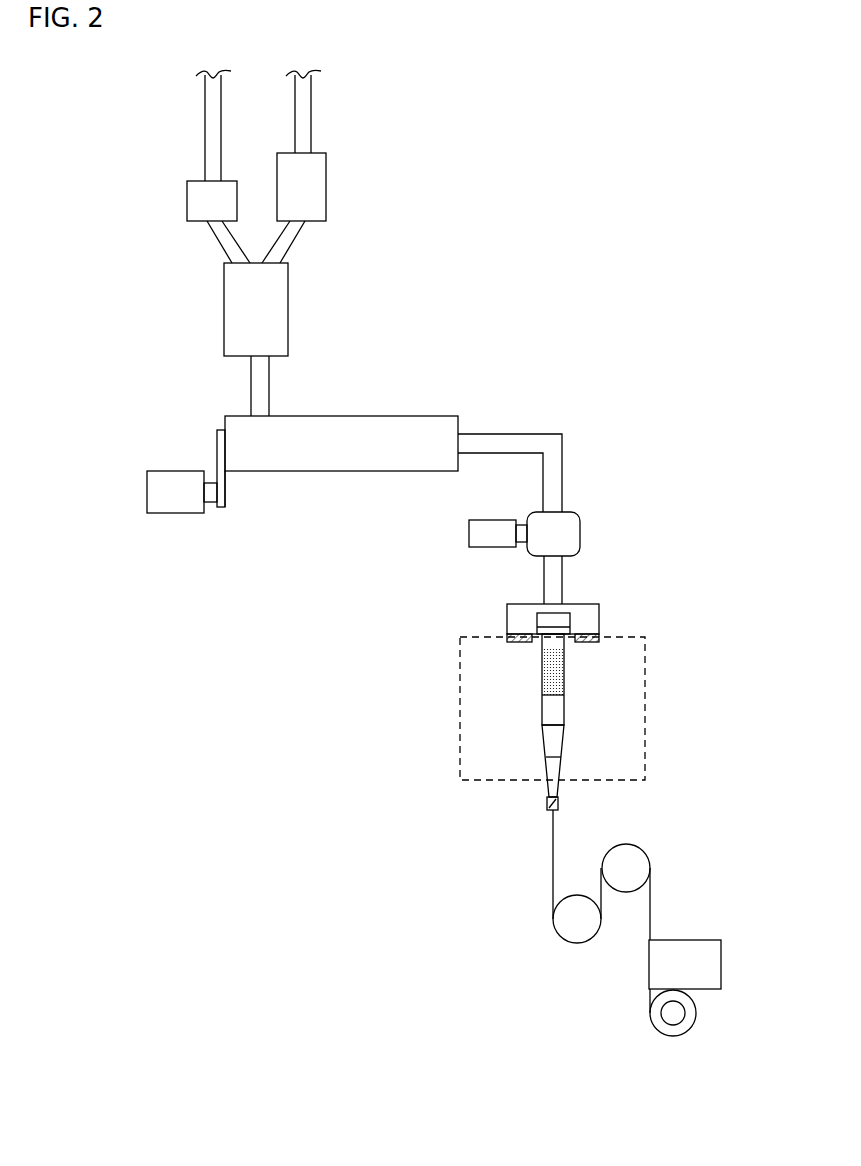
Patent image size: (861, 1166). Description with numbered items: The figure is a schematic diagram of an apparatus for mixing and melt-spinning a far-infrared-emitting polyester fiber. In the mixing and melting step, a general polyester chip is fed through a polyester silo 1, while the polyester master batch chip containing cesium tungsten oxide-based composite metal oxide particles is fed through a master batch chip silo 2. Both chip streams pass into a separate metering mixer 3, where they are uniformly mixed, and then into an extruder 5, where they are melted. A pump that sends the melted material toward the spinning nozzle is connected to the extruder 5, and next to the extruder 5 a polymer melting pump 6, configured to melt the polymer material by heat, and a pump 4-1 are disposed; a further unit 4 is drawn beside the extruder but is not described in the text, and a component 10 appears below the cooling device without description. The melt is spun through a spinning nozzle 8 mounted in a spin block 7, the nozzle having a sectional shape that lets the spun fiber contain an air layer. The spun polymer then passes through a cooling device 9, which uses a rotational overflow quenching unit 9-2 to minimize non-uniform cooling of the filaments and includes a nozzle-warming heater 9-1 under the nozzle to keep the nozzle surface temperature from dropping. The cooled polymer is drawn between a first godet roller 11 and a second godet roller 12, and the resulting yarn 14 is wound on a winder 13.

The polyester silo 1 is at (313, 190).
The master batch chip silo 2 is at (198, 203).
The metering mixer 3 is at (275, 310).
The heater 4 is at (162, 495).
The pump 4-1 is at (478, 532).
The extruder 5 is at (385, 430).
The polymer melting pump 6 is at (563, 525).
The spin block 7 is at (588, 612).
The spinning nozzle 8 is at (543, 619).
The cooling device 9 is at (460, 667).
The nozzle-warming heater 9-1 is at (590, 643).
The rotational overflow quenching (ROQ) unit 9-2 is at (562, 683).
The fiber guide 10 is at (560, 805).
The first godet roller 11 is at (568, 928).
The second godet roller 12 is at (635, 868).
The winder 13 is at (717, 963).
The yarn 14 is at (690, 1018).